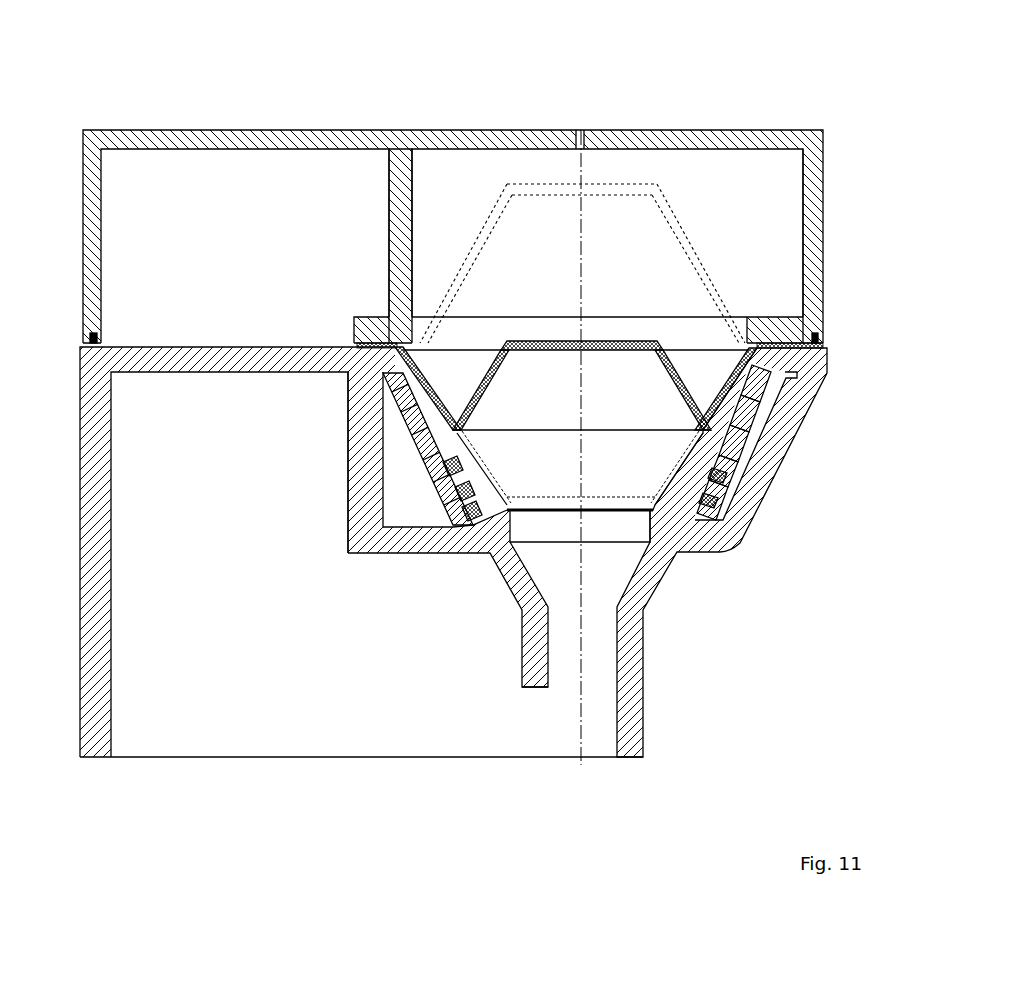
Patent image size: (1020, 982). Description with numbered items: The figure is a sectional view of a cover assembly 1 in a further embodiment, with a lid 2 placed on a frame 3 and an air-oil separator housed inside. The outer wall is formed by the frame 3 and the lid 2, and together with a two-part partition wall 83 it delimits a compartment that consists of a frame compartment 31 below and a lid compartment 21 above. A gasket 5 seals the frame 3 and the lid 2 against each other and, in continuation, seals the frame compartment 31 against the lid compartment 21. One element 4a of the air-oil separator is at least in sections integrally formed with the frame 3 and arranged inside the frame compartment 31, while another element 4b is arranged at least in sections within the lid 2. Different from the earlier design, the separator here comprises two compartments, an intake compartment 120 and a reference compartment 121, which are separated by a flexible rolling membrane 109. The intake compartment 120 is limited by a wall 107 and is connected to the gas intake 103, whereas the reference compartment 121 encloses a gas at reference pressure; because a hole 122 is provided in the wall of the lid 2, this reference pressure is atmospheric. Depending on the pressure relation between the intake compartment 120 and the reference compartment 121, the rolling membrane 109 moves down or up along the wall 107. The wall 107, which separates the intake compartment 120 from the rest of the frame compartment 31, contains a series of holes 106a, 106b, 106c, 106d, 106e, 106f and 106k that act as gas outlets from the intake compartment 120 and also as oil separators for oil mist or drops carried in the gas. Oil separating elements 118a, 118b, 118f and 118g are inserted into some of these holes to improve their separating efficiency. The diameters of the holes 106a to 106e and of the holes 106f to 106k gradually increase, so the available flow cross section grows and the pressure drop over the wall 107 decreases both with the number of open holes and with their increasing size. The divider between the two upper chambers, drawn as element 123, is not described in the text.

The cover assembly 1 is at (527, 72).
The lid 2 is at (668, 135).
The frame 3 is at (700, 543).
The element of the air-oil separator 4a is at (632, 528).
The other element of the air-oil separator 4b is at (719, 171).
The gasket 5 is at (825, 338).
The lid compartment 21 is at (254, 168).
The frame compartment 31 is at (247, 476).
The partition wall 83 is at (393, 236).
The gas intake 103 is at (580, 633).
The hole 106a is at (690, 493).
The hole 106b is at (700, 467).
The hole 106c is at (729, 444).
The hole 106d is at (745, 412).
The hole 106e is at (762, 384).
The hole 106f is at (480, 488).
The hole 106k is at (403, 382).
The wall 107 is at (440, 457).
The rolling membrane 109 is at (680, 229).
The oil separating element 118a is at (690, 498).
The oil separating element 118b is at (700, 470).
The oil separating element 118f is at (457, 509).
The oil separating element 118g is at (463, 457).
The intake compartment 120 is at (633, 428).
The reference compartment 121 is at (643, 272).
The hole 122 is at (578, 130).
The partition wall 123 is at (405, 215).